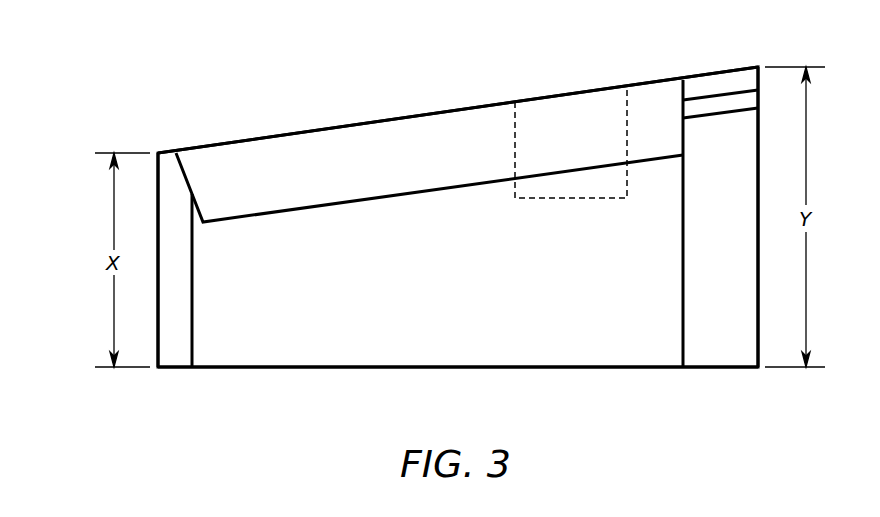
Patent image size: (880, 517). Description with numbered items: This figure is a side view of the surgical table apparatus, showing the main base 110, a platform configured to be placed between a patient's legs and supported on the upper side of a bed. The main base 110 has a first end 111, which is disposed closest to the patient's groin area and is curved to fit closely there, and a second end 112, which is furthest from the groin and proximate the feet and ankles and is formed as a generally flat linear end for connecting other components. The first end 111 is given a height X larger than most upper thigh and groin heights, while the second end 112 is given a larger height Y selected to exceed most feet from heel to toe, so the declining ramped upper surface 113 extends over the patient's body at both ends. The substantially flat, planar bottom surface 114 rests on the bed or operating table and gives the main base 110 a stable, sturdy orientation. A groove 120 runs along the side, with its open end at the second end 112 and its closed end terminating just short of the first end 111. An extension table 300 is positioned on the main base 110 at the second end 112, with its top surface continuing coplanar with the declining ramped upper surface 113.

The main base 110 is at (328, 335).
The first end 111 is at (156, 204).
The second end 112 is at (686, 200).
The declining ramped upper surface 113 is at (377, 120).
The substantially flat, planar bottom surface 114 is at (478, 368).
The groove 120 is at (291, 158).
The extension table 300 is at (712, 337).